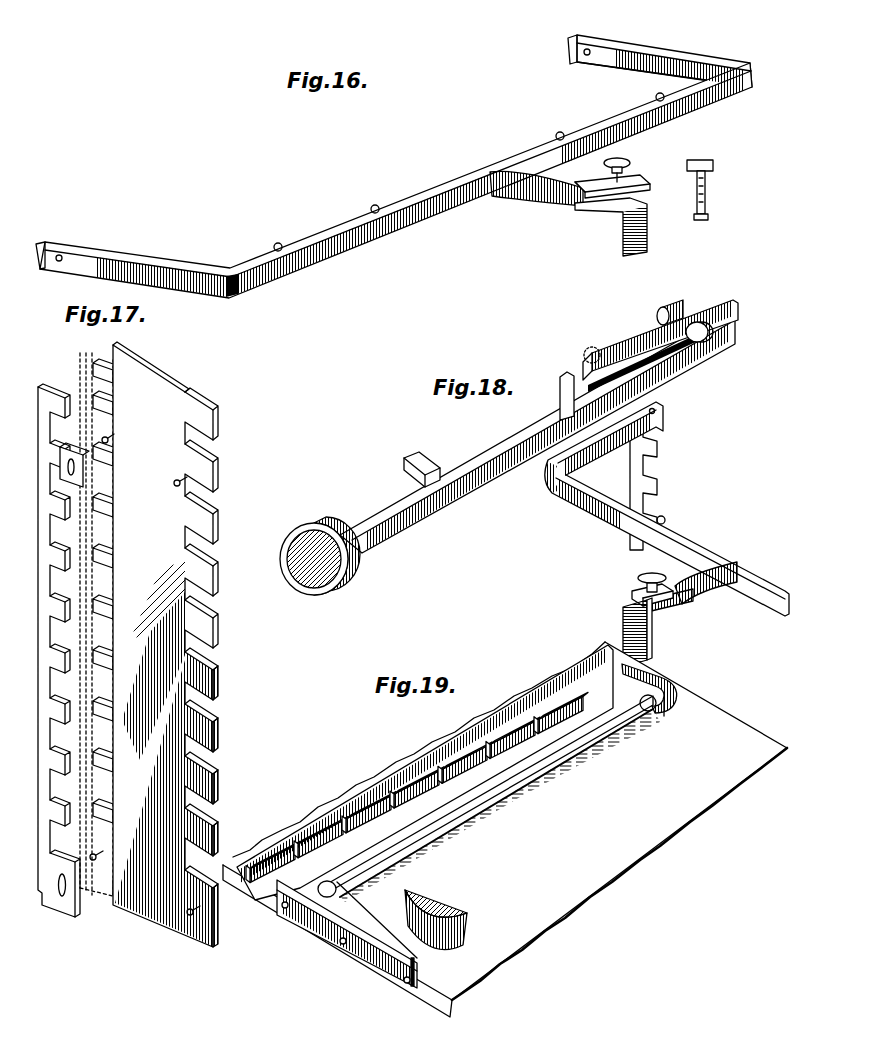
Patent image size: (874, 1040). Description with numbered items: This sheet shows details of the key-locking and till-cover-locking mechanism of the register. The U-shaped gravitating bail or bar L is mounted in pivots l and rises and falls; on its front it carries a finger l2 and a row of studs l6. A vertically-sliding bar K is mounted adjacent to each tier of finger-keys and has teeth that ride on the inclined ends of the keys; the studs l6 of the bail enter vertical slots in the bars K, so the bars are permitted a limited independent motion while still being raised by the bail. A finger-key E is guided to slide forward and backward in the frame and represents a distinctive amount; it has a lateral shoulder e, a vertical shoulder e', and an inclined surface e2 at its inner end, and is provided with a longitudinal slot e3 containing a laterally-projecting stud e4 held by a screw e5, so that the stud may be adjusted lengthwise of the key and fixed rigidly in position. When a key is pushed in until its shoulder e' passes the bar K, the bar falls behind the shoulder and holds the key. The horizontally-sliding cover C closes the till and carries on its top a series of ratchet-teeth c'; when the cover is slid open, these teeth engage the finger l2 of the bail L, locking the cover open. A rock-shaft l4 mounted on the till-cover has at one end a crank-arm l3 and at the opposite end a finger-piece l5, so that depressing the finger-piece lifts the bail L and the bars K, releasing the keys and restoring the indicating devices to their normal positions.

In FIG. 16, the U-shaped gravitating bail L is at (394, 166).
In FIG. 18, the U-shaped gravitating bail L is at (752, 583).
In FIG. 16, the pivots l is at (583, 53).
In FIG. 18, the pivots l is at (663, 413).
In FIG. 16, the studs l6 is at (279, 241).
In FIG. 18, the studs l6 is at (666, 520).
In FIG. 16, the finger l2 is at (623, 237).
In FIG. 18, the finger l2 is at (622, 627).
In FIG. 17, the vertically-sliding bar K is at (42, 654).
In FIG. 18, the vertically-sliding bar K is at (658, 465).
In FIG. 18, the finger-key E is at (507, 453).
In FIG. 18, the lateral shoulder e is at (417, 462).
In FIG. 18, the vertical shoulder e' is at (547, 396).
In FIG. 18, the inclined surface e2 is at (635, 342).
In FIG. 18, the longitudinal slot e3 is at (682, 358).
In FIG. 18, the laterally-projecting stud e4 is at (672, 308).
In FIG. 18, the screw e5 is at (727, 339).
In FIG. 19, the horizontally-sliding cover C is at (505, 829).
In FIG. 19, the ratchet-teeth c' is at (425, 772).
In FIG. 19, the crank-arm l3 is at (664, 675).
In FIG. 19, the rock-shaft l4 is at (566, 780).
In FIG. 19, the finger-piece l5 is at (434, 914).